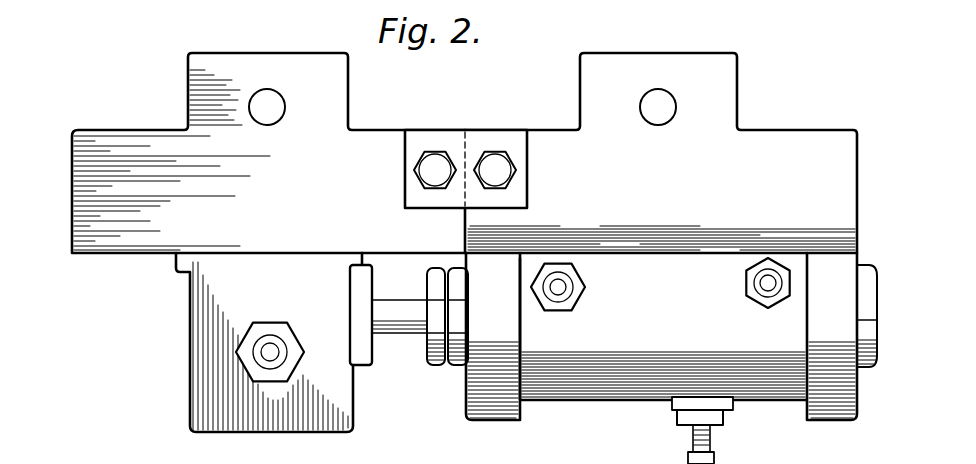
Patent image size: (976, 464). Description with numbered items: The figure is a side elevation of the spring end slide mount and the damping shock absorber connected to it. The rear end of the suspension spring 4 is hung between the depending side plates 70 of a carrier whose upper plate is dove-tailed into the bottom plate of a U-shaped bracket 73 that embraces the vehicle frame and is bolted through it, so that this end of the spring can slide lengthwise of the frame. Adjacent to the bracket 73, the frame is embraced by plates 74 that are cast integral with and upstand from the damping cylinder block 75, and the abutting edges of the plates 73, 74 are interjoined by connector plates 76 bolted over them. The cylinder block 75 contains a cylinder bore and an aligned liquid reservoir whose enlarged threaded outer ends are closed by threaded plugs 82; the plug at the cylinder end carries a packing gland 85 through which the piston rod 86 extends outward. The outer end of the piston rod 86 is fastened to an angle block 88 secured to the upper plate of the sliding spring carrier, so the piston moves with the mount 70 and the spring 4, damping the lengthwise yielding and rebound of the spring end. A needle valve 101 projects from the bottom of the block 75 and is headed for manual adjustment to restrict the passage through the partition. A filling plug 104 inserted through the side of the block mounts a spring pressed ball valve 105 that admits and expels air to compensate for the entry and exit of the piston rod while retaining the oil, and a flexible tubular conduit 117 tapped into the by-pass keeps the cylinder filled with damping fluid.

The suspension spring 4 is at (386, 421).
The U-shaped bracket 73 is at (115, 142).
The plates 74 is at (713, 130).
The connector plates 76 is at (478, 138).
The side plates 70 is at (205, 327).
The angle block 88 is at (357, 348).
The piston rod 86 is at (388, 312).
The packing gland 85 is at (436, 363).
The threaded plugs 82 is at (457, 362).
The damping cylinder block 75 is at (603, 388).
The flexible tubular conduit 117 is at (570, 293).
The filling plug 104 is at (746, 277).
The spring pressed ball valve 105 is at (766, 289).
The needle valve 101 is at (713, 437).